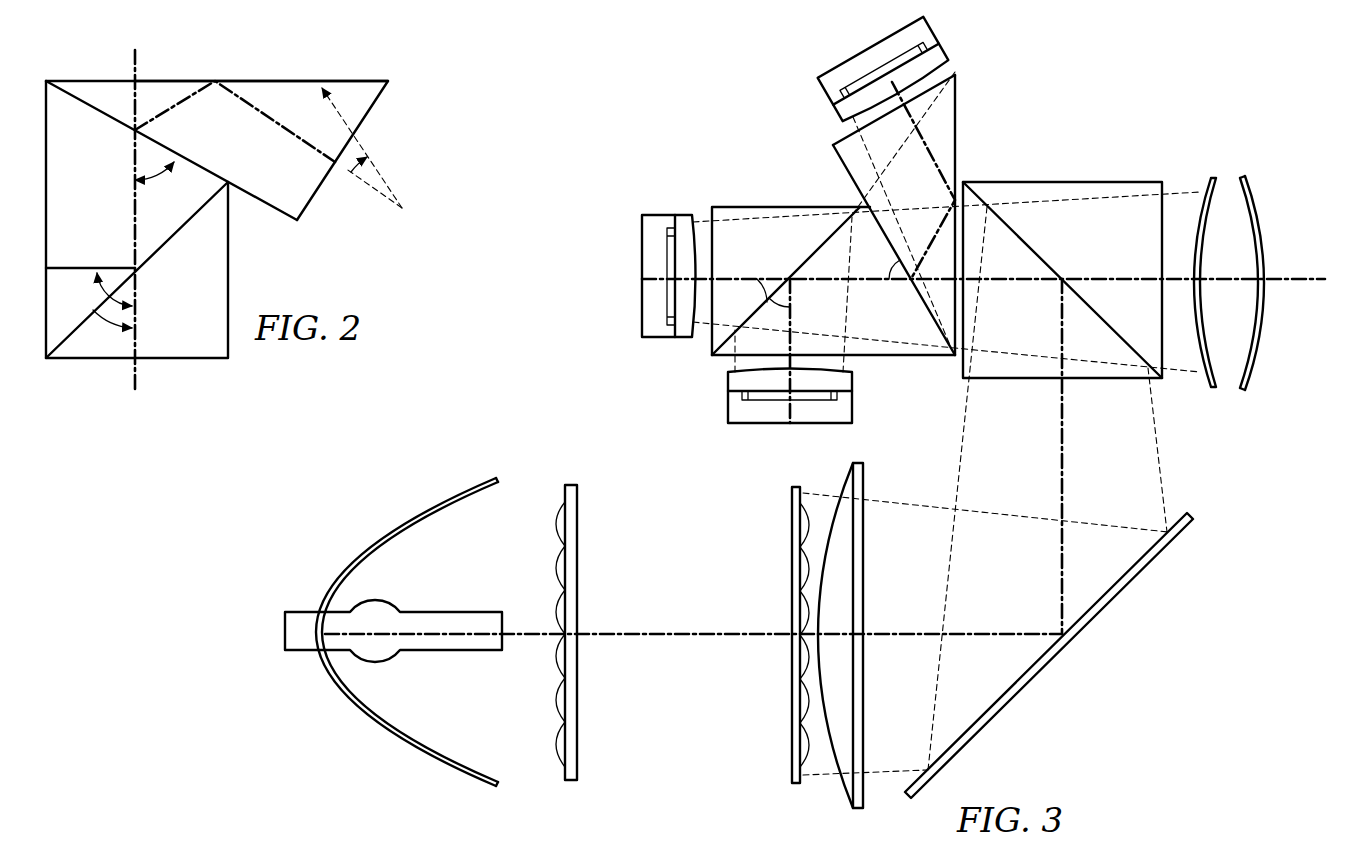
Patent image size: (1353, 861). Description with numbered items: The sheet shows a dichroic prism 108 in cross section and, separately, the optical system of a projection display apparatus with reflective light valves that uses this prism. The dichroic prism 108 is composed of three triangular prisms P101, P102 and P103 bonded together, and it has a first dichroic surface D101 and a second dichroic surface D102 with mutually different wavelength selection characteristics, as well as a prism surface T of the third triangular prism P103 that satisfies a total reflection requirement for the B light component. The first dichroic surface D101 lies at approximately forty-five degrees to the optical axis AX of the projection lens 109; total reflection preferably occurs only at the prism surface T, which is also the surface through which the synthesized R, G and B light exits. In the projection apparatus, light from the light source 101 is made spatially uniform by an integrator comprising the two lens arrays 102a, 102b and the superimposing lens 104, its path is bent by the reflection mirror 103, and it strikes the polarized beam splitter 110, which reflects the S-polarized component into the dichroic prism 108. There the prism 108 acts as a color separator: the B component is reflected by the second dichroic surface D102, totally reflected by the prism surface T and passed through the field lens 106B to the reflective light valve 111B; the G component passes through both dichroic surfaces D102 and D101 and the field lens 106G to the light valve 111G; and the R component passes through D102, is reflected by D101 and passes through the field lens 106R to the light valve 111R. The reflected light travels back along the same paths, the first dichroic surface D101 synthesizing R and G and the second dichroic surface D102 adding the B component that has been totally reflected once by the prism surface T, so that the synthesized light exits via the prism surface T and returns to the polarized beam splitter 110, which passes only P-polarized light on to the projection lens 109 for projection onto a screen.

In FIG. 2, the dichroic prism 108 is at (279, 66).
In FIG. 3, the dichroic prism 108 is at (730, 124).
In FIG. 2, the first triangular prism P101 is at (207, 343).
In FIG. 3, the first triangular prism P101 is at (750, 207).
In FIG. 2, the second triangular prism P102 is at (118, 195).
In FIG. 3, the second triangular prism P102 is at (883, 356).
In FIG. 2, the third triangular prism P103 is at (286, 169).
In FIG. 3, the third triangular prism P103 is at (850, 163).
In FIG. 2, the first dichroic surface D101 is at (178, 232).
In FIG. 3, the first dichroic surface D101 is at (813, 253).
In FIG. 2, the second dichroic surface D102 is at (215, 198).
In FIG. 3, the second dichroic surface D102 is at (930, 310).
In FIG. 2, the prism surface T is at (182, 81).
In FIG. 3, the prism surface T is at (955, 132).
In FIG. 2, the optical axis AX is at (132, 62).
In FIG. 3, the optical axis AX is at (1306, 283).
In FIG. 3, the reflective light valve 111G is at (647, 248).
In FIG. 3, the reflective light valve 111R is at (733, 413).
In FIG. 3, the reflective light valve 111B is at (850, 68).
In FIG. 3, the field lens 106G is at (692, 212).
In FIG. 3, the field lens 106R is at (733, 378).
In FIG. 3, the field lens 106B is at (845, 111).
In FIG. 3, the polarized beam splitter 110 is at (1062, 182).
In FIG. 3, the projection lens 109 is at (1225, 176).
In FIG. 3, the light source 101 is at (393, 724).
In FIG. 3, the lens array 102a is at (553, 700).
In FIG. 3, the lens array 102b is at (792, 714).
In FIG. 3, the superimposing lens 104 is at (857, 808).
In FIG. 3, the reflection mirror 103 is at (1043, 673).